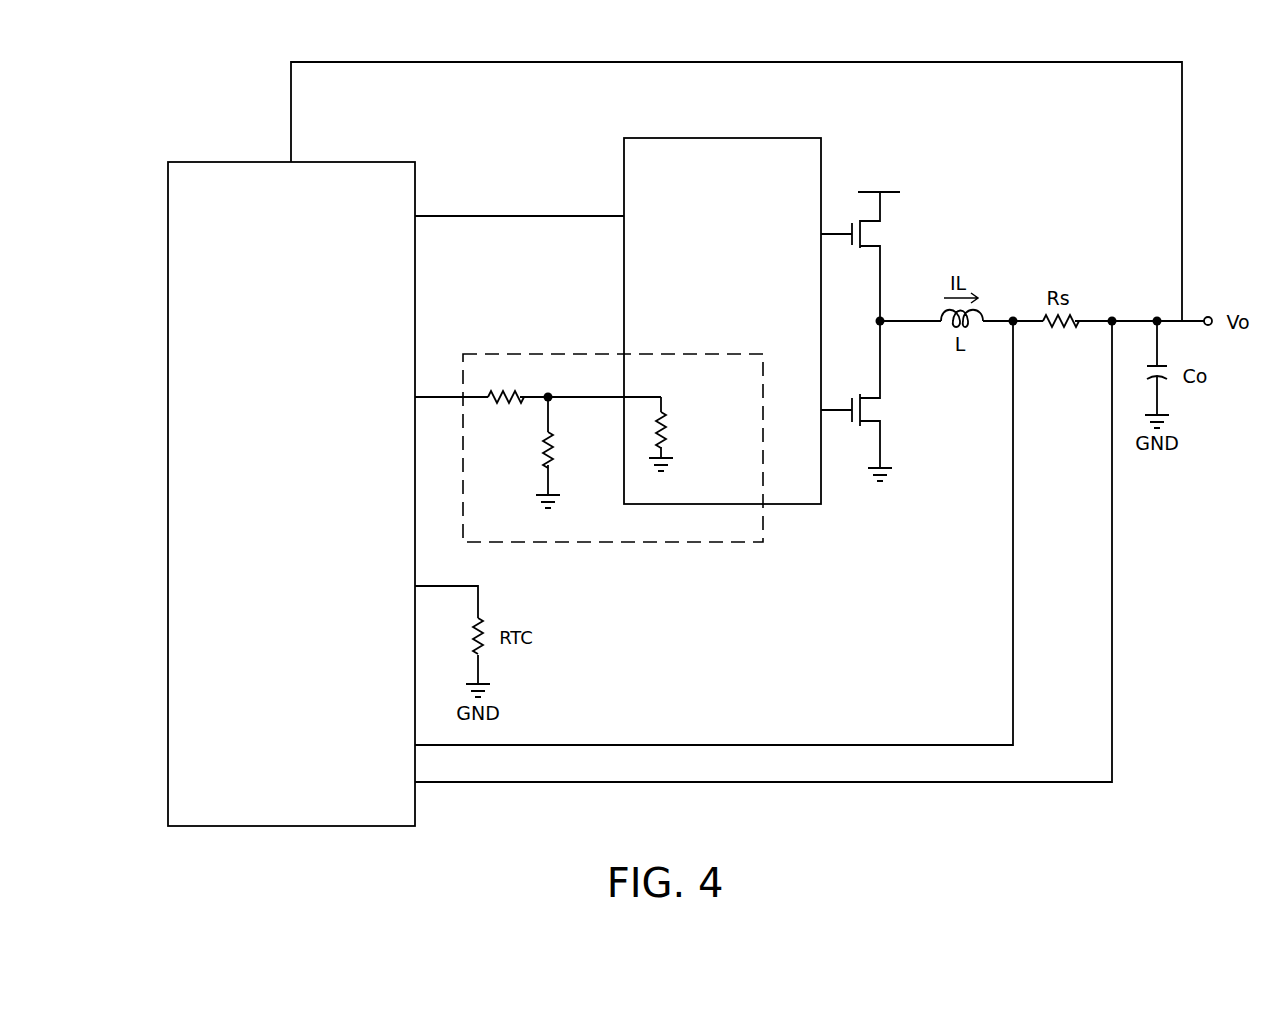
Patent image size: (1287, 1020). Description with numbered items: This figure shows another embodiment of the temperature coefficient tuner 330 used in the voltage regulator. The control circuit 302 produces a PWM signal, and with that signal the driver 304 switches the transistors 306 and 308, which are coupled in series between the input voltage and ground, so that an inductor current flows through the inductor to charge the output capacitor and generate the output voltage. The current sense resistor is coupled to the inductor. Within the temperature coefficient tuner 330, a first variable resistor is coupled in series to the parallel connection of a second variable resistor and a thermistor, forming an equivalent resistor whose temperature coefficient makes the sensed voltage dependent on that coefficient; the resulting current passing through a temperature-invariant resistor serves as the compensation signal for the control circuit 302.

The control circuit 302 is at (355, 162).
The driver 304 is at (712, 138).
The transistor 306 is at (894, 233).
The transistor 308 is at (894, 409).
The temperature coefficient tuner 330 is at (716, 545).